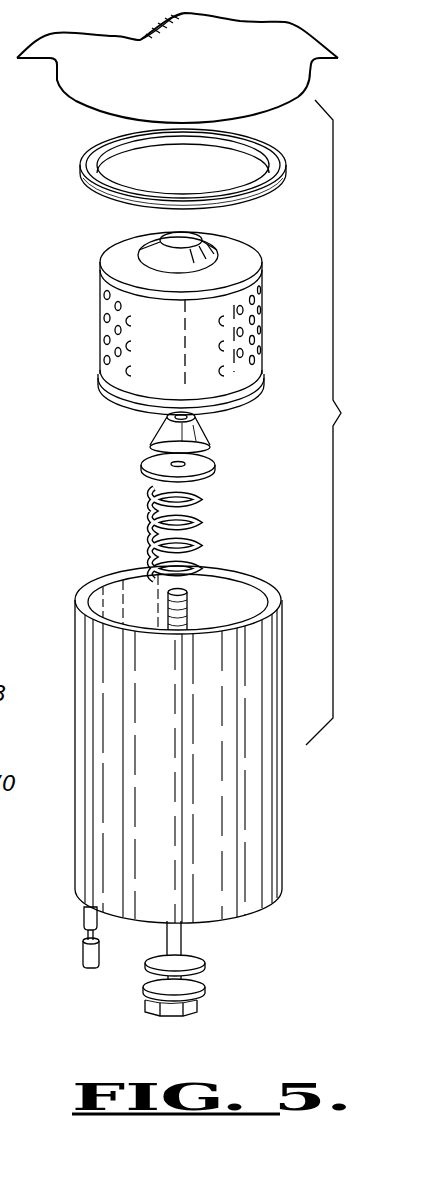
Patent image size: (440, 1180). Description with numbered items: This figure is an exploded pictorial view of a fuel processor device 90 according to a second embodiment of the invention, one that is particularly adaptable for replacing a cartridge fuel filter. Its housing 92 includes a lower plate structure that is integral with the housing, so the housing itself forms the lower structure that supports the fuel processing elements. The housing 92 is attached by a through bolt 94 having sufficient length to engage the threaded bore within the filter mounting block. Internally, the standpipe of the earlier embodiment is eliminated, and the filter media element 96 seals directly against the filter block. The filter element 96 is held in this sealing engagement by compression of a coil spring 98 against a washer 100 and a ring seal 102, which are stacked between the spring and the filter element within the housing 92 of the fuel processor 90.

The fuel processor device 90 is at (344, 422).
The housing 92 is at (258, 802).
The through bolt 94 is at (182, 942).
The filter media element 96 is at (241, 333).
The coil spring 98 is at (198, 512).
The washer 100 is at (213, 468).
The ring seal 102 is at (198, 430).